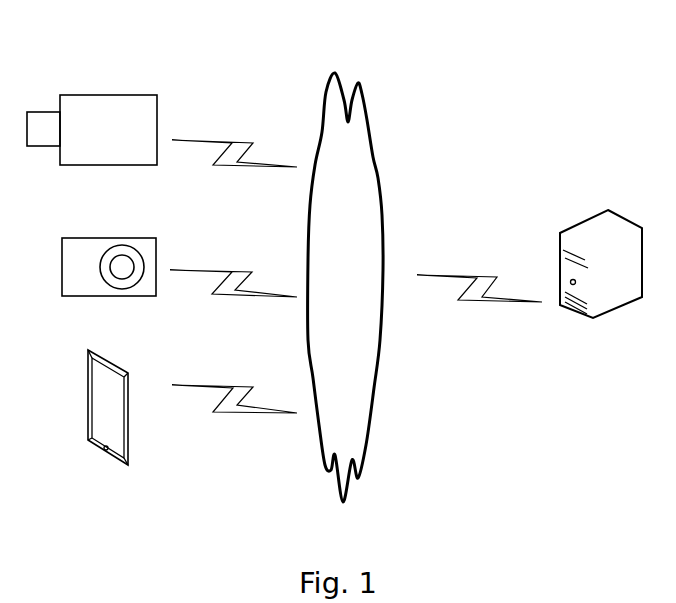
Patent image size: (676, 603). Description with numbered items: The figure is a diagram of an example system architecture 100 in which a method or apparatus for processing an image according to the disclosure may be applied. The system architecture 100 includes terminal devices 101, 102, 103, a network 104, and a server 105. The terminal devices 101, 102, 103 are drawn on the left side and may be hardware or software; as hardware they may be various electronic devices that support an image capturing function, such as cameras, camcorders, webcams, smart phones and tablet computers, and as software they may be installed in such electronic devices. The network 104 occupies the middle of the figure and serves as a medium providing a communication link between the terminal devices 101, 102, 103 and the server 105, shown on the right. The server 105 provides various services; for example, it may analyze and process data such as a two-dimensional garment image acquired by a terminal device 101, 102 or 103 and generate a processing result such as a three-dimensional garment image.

The system architecture 100 is at (583, 46).
The terminal device 101 is at (162, 149).
The terminal device 102 is at (179, 284).
The terminal device 103 is at (192, 425).
The network 104 is at (346, 287).
The server 105 is at (529, 283).